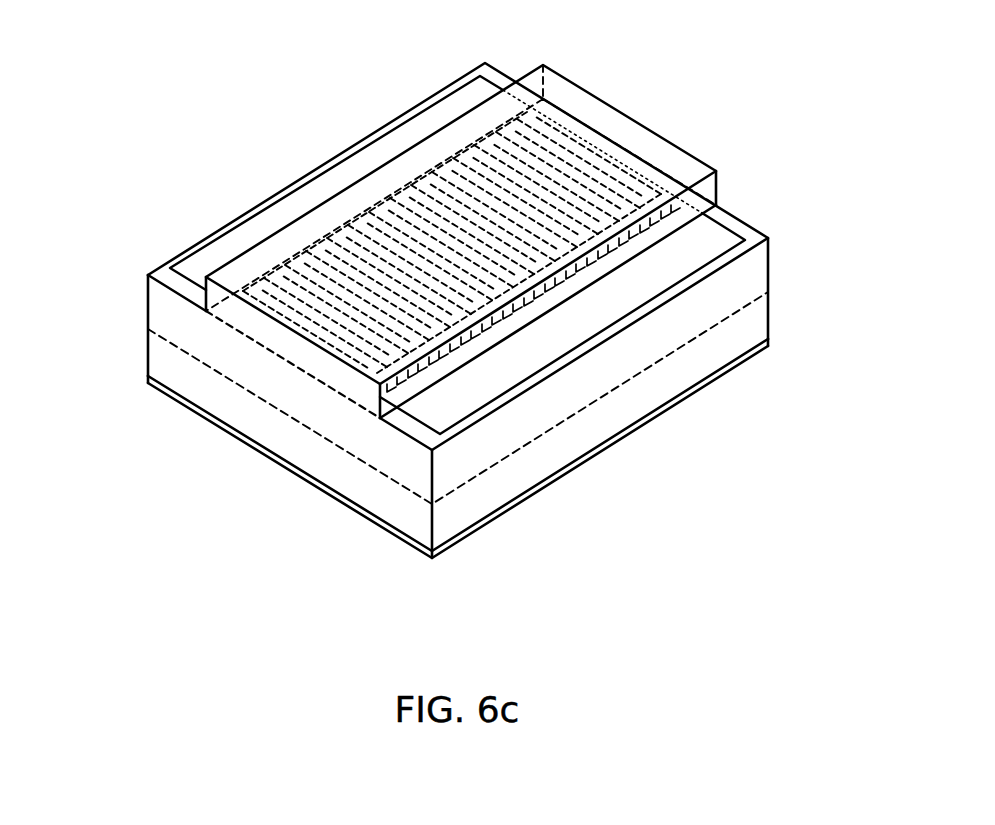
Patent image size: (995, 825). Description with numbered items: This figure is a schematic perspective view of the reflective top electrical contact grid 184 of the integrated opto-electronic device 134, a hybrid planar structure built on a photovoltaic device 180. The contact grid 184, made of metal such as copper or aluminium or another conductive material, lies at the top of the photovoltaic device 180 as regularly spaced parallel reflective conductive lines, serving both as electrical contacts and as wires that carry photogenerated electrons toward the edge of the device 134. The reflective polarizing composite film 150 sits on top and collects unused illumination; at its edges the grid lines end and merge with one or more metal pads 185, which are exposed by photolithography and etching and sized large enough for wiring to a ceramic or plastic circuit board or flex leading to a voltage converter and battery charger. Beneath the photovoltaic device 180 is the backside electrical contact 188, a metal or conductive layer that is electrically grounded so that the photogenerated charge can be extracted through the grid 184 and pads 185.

The integrated opto-electronic device 134 is at (118, 184).
The reflective polarizing composite film 150 is at (736, 153).
The photovoltaic device 180 is at (786, 229).
The reflective top electrical contact grid 184 is at (633, 178).
The metal pads 185 is at (734, 241).
The backside electrical contact 188 is at (655, 415).